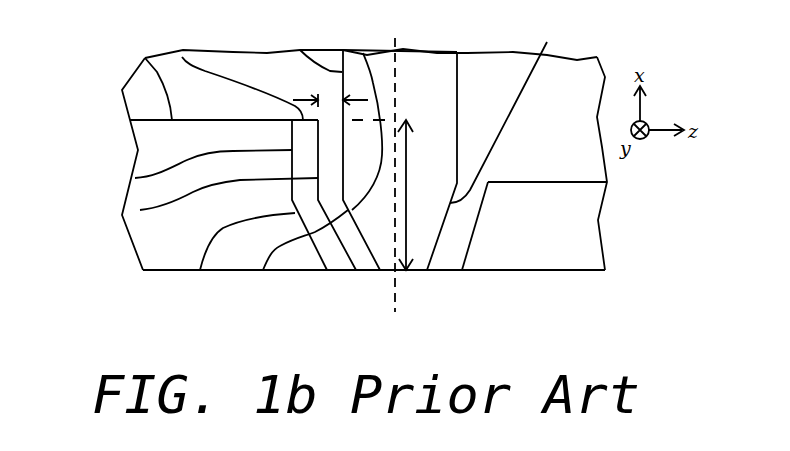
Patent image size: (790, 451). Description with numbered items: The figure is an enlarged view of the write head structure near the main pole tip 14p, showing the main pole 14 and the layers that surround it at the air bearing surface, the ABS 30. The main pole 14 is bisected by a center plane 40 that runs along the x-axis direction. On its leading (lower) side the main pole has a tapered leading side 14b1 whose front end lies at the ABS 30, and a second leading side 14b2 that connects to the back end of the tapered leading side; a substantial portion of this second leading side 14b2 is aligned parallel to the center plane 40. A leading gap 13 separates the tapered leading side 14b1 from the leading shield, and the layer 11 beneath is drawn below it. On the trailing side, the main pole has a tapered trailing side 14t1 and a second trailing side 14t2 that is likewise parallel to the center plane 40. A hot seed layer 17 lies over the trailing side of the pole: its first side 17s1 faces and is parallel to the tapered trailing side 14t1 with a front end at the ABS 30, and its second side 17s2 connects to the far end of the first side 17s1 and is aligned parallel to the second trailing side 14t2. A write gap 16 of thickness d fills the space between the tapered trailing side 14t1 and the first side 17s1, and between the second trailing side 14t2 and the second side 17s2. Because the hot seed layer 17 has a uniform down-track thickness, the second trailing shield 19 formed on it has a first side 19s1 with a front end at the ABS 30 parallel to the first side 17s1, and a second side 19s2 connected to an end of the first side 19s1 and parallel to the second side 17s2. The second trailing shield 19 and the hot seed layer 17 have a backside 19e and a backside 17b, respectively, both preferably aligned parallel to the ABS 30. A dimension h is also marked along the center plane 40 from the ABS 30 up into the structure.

The substrate 11 is at (583, 223).
The leading gap 13 is at (447, 270).
The main pole 14 is at (440, 77).
The main pole tip 14p is at (415, 270).
The tapered trailing side 14t1 is at (363, 53).
The second trailing side 14t2 is at (300, 50).
The tapered leading side 14b1 is at (547, 42).
The second leading side 14b2 is at (457, 95).
The write gap 16 is at (363, 258).
The hot seed layer 17 is at (333, 258).
The backside of hot seed layer 17b is at (182, 57).
The first side of hot seed layer 17s1 is at (263, 270).
The second side of hot seed layer 17s2 is at (140, 210).
The second trailing shield 19 is at (158, 135).
The backside of second trailing shield 19e is at (145, 58).
The first side of second trailing shield 19s1 is at (200, 270).
The second side of second trailing shield 19s2 is at (135, 178).
The ABS 30 is at (650, 270).
The center plane 40 is at (395, 175).
The thickness of write gap d is at (333, 100).
The height h is at (388, 195).